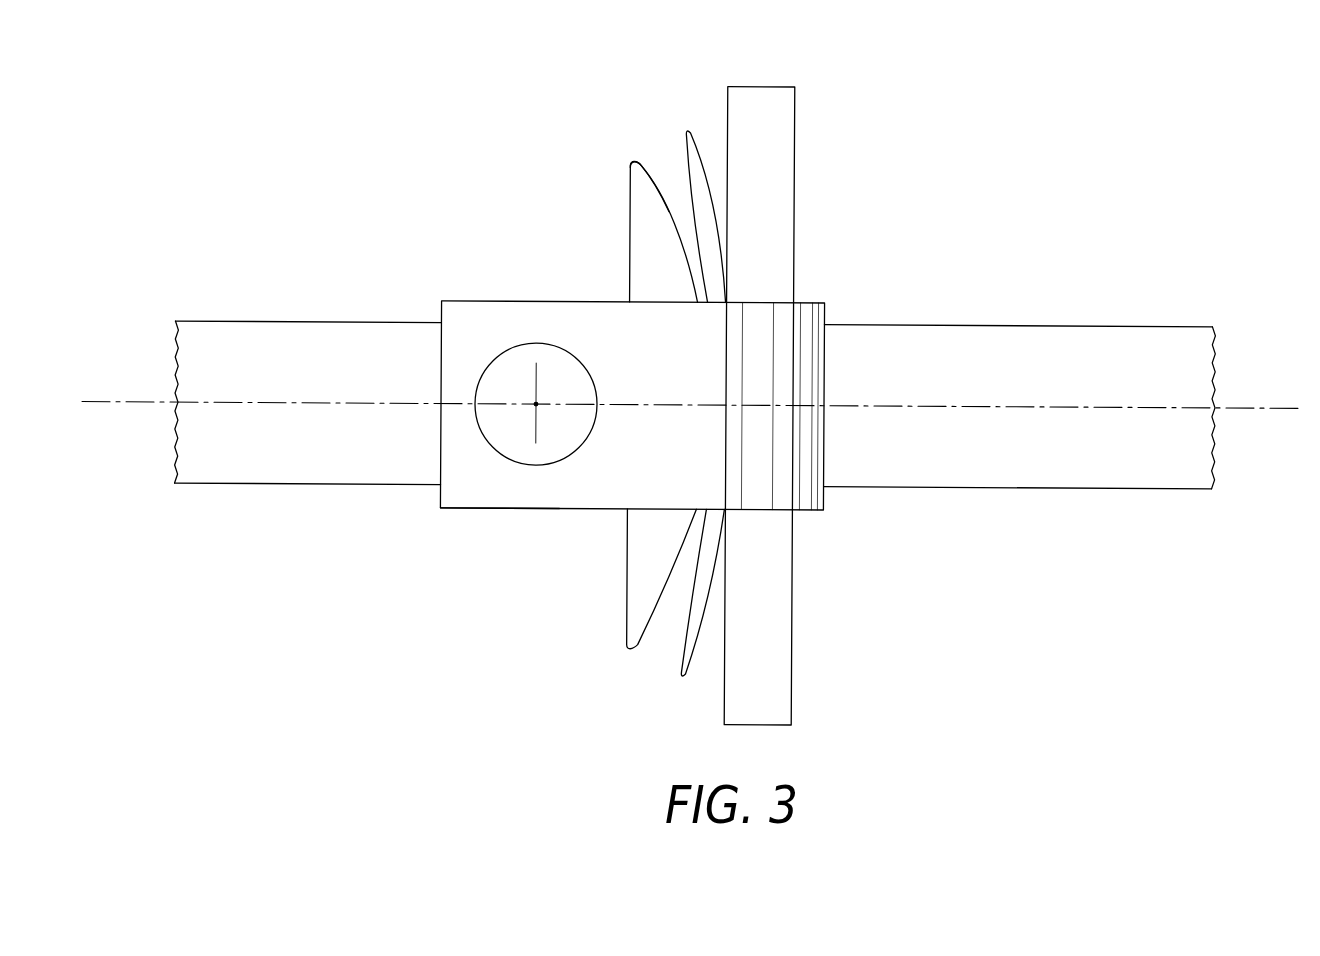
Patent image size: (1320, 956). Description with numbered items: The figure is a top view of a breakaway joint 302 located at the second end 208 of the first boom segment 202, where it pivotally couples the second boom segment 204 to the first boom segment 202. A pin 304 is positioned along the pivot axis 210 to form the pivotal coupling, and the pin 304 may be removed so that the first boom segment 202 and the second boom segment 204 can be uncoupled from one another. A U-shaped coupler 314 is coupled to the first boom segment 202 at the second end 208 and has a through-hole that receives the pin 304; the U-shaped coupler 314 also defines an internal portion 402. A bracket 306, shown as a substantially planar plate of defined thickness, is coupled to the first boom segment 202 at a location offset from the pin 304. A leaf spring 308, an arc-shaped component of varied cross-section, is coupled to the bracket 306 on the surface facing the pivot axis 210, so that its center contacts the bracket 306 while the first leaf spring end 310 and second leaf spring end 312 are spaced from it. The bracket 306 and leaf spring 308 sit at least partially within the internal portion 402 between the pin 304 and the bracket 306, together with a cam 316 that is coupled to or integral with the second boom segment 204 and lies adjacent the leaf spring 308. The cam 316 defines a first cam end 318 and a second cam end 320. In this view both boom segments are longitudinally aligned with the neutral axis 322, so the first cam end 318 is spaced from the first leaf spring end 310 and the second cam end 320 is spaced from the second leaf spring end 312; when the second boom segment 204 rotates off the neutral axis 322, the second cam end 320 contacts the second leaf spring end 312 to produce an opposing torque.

The first boom segment 202 is at (1141, 340).
The second boom segment 204 is at (251, 478).
The second end 208 is at (960, 252).
The pivot axis 210 is at (536, 405).
The breakaway joint 302 is at (654, 156).
The pin 304 is at (592, 432).
The bracket 306 is at (780, 146).
The leaf spring 308 is at (677, 653).
The first leaf spring end 310 is at (685, 128).
The second leaf spring end 312 is at (684, 680).
The U-shaped coupler 314 is at (558, 310).
The cam 316 is at (638, 203).
The first cam end 318 is at (630, 162).
The second cam end 320 is at (630, 648).
The neutral axis 322 is at (1286, 412).
The internal portion 402 is at (481, 509).